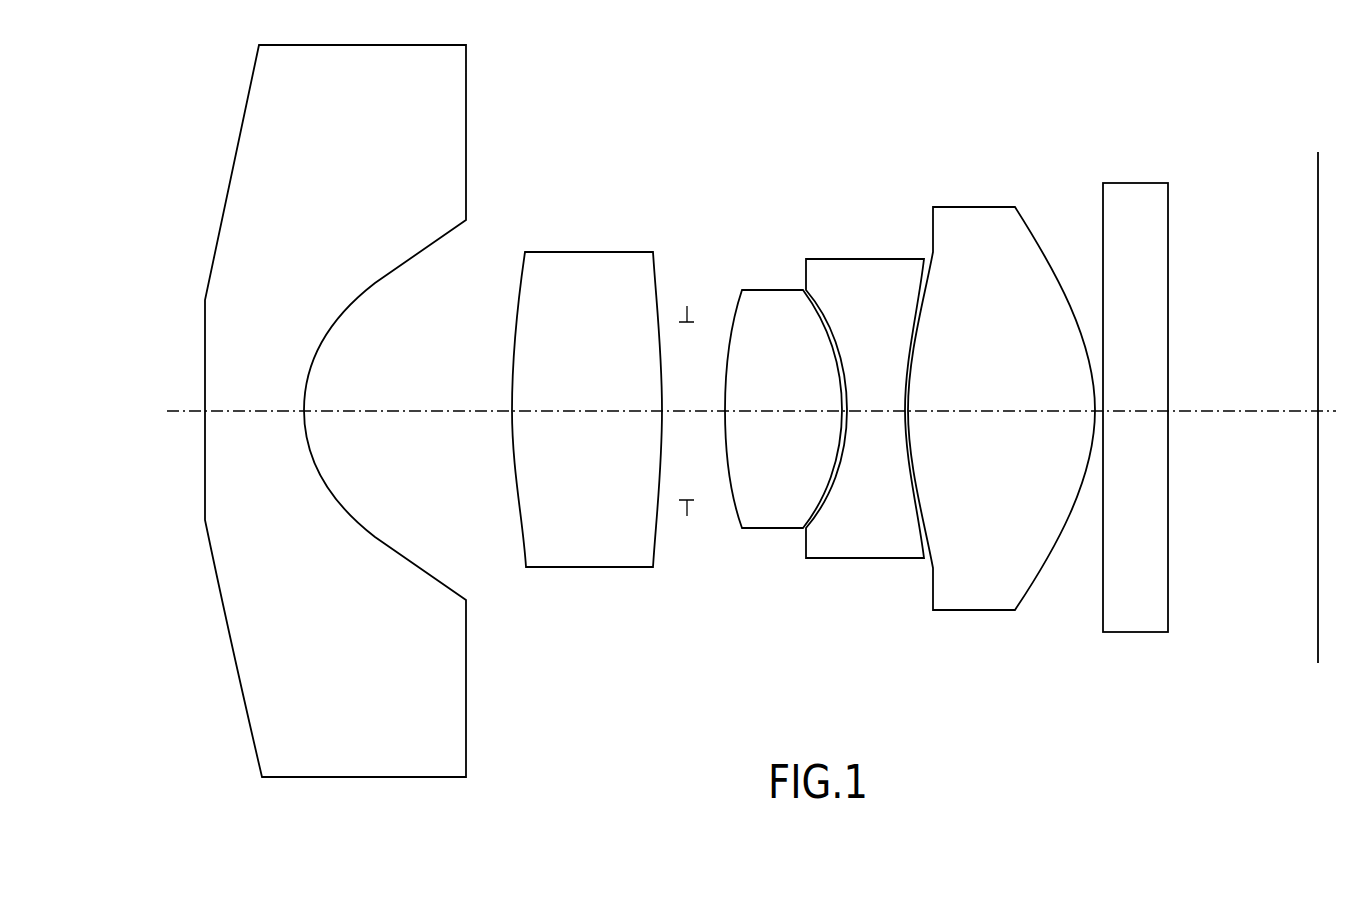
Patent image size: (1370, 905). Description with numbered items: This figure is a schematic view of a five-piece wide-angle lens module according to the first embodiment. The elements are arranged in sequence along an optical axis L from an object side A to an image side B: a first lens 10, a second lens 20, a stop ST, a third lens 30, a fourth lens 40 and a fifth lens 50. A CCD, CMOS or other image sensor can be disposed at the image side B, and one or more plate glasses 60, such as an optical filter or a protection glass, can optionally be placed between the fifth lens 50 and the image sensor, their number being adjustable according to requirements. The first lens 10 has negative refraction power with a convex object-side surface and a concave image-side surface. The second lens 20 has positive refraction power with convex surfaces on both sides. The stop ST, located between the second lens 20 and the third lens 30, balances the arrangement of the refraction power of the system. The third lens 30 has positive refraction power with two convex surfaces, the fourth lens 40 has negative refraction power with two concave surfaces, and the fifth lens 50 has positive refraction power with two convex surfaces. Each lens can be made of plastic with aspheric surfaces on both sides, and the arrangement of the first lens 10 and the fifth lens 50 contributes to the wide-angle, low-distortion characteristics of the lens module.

The first lens 10 is at (283, 148).
The second lens 20 is at (583, 257).
The third lens 30 is at (772, 288).
The fourth lens 40 is at (848, 259).
The fifth lens 50 is at (974, 207).
The plate glass 60 is at (1136, 183).
The stop ST is at (697, 308).
The optical axis L is at (428, 411).
The object side A is at (740, 412).
The image side B is at (1341, 407).